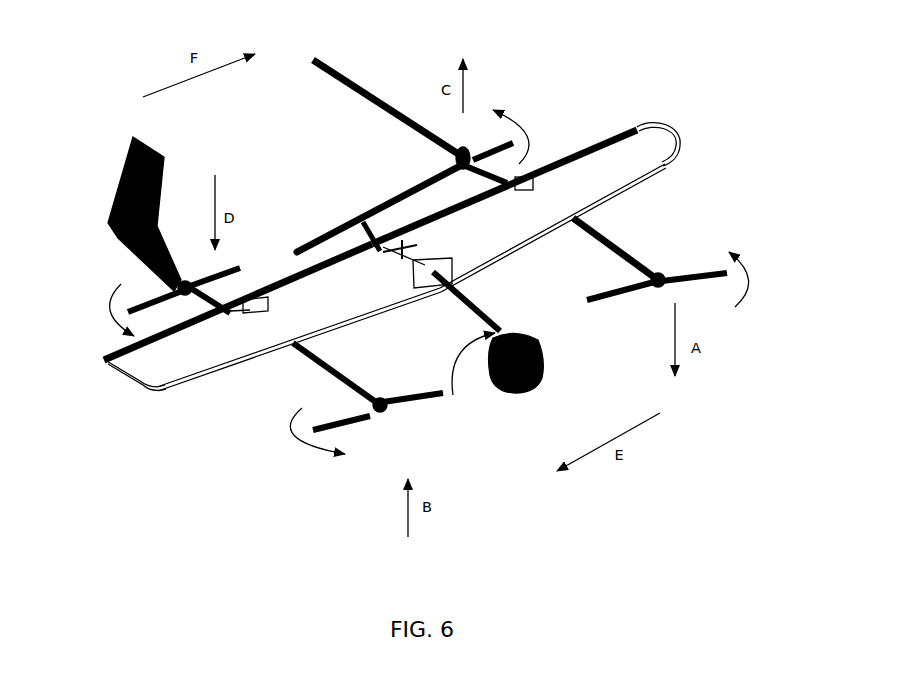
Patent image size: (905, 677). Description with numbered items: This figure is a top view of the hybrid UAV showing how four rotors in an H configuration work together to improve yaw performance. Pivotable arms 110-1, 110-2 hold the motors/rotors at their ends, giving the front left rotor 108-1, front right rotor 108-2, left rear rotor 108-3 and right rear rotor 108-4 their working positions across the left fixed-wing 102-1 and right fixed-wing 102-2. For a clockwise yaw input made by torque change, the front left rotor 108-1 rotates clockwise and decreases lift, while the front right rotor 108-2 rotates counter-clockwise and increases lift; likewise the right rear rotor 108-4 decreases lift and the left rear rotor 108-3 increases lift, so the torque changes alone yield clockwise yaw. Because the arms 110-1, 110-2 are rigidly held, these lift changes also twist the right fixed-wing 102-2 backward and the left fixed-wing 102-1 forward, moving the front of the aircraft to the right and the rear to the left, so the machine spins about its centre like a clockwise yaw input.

The left fixed-wing 102-1 is at (642, 139).
The right fixed-wing 102-2 is at (152, 362).
The front left rotor 108-1 is at (680, 256).
The front right rotor 108-2 is at (366, 415).
The left rear rotor 108-3 is at (474, 141).
The right rear rotor 108-4 is at (165, 287).
The pivotable arm 110-1 is at (603, 227).
The pivotable arm 110-2 is at (306, 372).